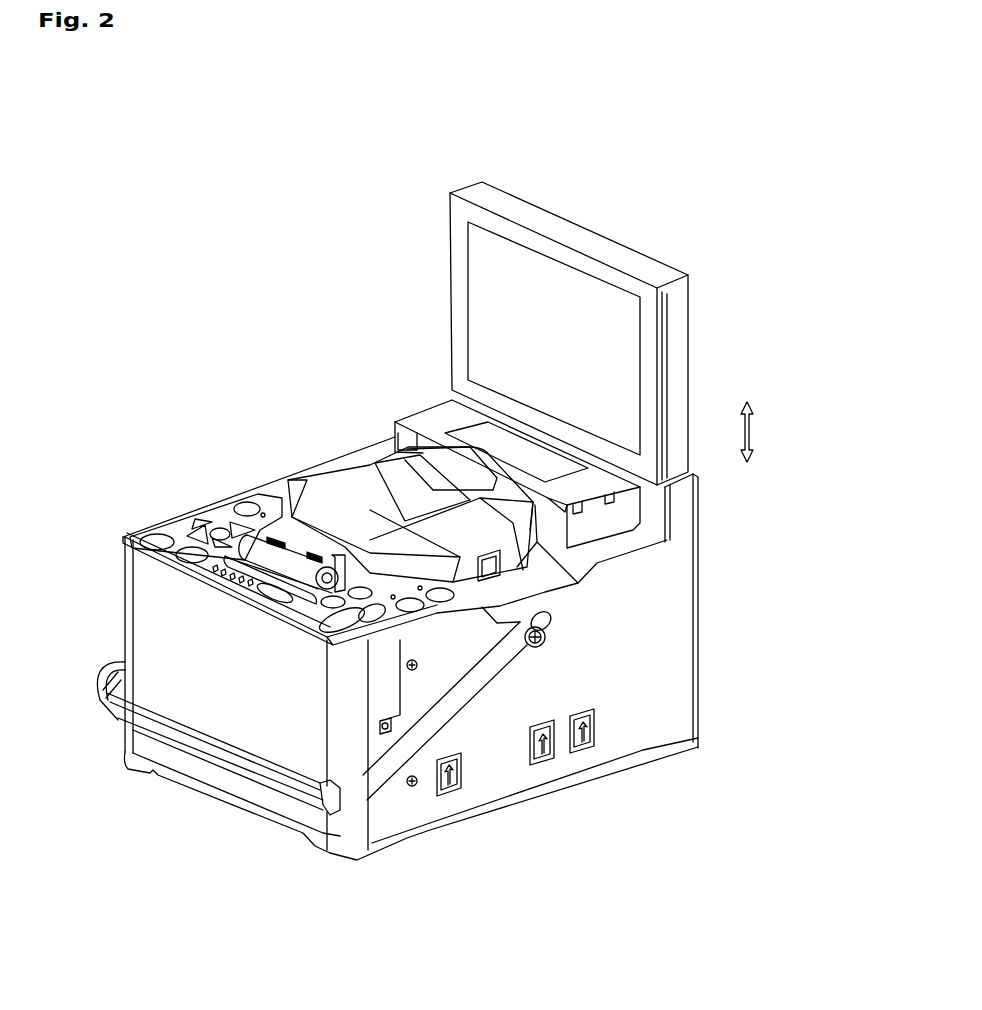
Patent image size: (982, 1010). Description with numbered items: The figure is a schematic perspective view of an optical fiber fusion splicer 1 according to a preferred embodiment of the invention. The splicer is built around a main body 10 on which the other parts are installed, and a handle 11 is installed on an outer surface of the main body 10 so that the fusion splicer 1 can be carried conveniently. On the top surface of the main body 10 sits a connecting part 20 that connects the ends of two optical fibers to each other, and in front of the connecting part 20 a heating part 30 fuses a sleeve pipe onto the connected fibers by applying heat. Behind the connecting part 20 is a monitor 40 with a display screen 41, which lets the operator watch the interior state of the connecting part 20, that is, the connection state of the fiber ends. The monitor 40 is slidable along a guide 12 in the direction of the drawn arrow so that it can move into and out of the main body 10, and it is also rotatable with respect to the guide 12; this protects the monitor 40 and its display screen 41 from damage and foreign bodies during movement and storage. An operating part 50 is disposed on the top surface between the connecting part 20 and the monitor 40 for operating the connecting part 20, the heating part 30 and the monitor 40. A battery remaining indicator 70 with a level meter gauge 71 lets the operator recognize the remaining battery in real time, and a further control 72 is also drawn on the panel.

The fusion splicer 1 is at (727, 256).
The main body 10 is at (635, 708).
The handle 11 is at (440, 717).
The guide 12 is at (683, 518).
The connecting part 20 is at (325, 473).
The heating part 30 is at (440, 413).
The monitor 40 is at (520, 208).
The display screen 41 is at (553, 288).
The operating part 50 is at (177, 528).
The battery remaining indicator 70 is at (155, 587).
The level meter gauge 71 is at (226, 570).
The power button 72 is at (262, 596).